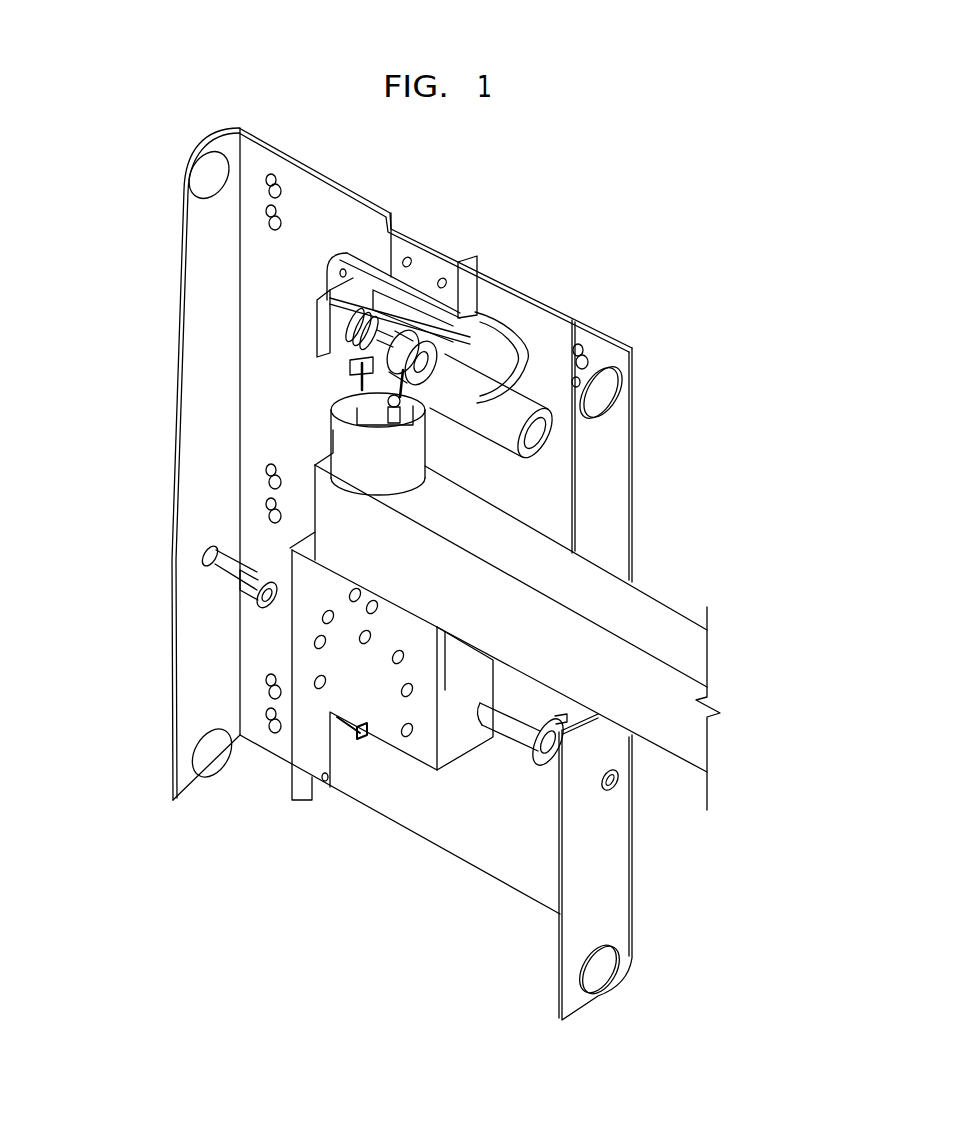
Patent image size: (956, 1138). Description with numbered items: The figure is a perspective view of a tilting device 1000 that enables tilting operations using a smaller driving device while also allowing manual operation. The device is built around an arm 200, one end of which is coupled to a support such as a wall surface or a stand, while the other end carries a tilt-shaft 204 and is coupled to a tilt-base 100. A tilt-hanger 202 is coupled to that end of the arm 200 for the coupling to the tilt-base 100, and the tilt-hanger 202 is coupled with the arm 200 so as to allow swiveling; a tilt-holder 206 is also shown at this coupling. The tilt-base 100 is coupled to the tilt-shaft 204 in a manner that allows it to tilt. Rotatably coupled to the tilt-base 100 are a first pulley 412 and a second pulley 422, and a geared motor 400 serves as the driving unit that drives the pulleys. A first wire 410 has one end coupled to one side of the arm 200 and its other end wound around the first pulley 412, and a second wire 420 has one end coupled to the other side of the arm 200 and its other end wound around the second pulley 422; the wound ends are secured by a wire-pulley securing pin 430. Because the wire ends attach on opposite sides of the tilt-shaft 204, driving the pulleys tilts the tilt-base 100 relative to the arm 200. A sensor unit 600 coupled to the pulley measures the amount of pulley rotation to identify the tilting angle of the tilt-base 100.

The tilting device 1000 is at (775, 175).
The tilt-base 100 is at (622, 877).
The arm 200 is at (690, 643).
The tilt-hanger 202 is at (302, 750).
The tilt-shaft 204 is at (558, 748).
The tilt-holder 206 is at (258, 590).
The geared motor 400 is at (513, 397).
The first wire 410 is at (573, 487).
The first pulley 412 is at (458, 320).
The second wire 420 is at (348, 378).
The second pulley 422 is at (383, 305).
The wire-pulley securing pin 430 is at (353, 398).
The sensor unit 600 is at (320, 318).